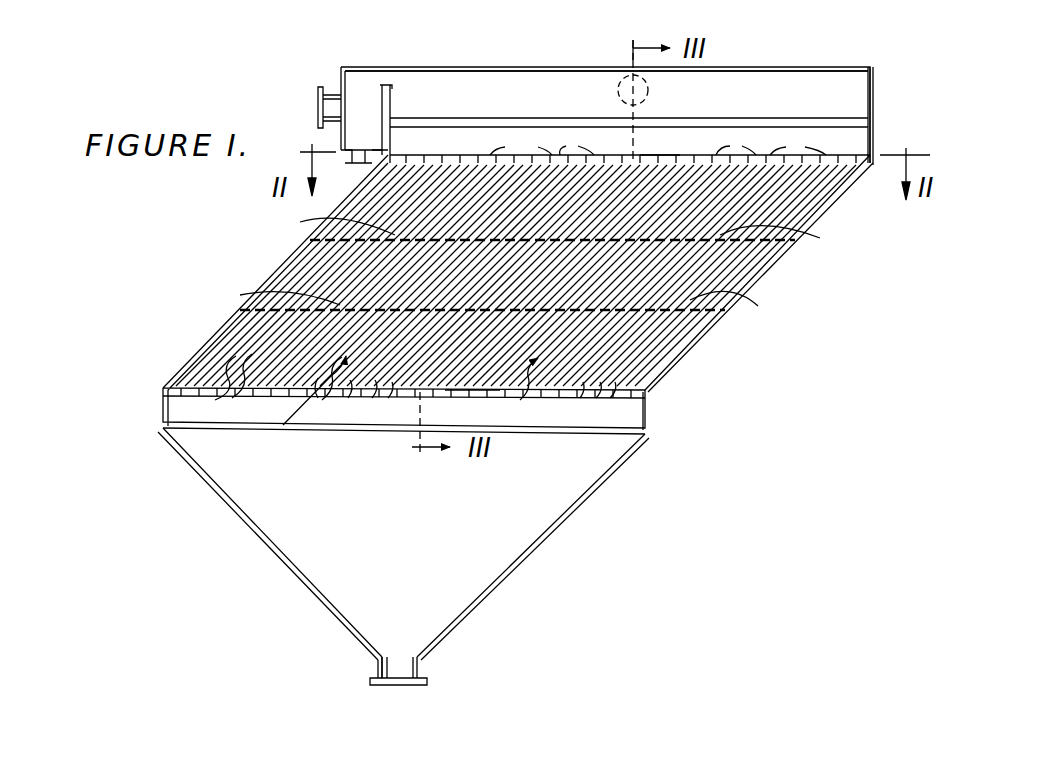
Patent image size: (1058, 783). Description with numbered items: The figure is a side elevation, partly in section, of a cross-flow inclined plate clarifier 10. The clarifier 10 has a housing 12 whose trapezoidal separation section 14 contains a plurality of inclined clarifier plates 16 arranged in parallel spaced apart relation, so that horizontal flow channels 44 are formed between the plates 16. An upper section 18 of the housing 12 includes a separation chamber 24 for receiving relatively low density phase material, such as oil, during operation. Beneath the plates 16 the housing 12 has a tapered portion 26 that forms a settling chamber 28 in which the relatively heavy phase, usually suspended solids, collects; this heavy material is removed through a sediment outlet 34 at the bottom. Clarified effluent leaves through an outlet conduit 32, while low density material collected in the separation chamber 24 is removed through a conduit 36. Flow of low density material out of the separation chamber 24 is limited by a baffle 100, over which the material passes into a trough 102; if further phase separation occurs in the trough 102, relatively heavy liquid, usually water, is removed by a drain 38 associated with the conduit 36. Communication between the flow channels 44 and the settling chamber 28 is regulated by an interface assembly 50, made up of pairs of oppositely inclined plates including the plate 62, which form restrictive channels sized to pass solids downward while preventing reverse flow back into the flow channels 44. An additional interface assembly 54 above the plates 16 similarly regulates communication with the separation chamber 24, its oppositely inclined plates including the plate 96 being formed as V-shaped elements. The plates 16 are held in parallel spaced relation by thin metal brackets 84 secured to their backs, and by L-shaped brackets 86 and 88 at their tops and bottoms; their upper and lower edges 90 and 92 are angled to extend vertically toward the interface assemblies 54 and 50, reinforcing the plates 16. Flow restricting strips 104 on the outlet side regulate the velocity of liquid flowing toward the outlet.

The cross-flow inclined plate clarifier 10 is at (896, 74).
The housing 12 is at (875, 100).
The trapezoidal separation section 14 is at (773, 297).
The inclined clarifier plates 16 is at (650, 343).
The upper section 18 is at (876, 119).
The separation chamber 24 is at (576, 104).
The tapered portion 26 is at (540, 548).
The settling chamber 28 is at (424, 557).
The outlet conduit 32 is at (649, 92).
The sediment outlet 34 is at (420, 672).
The low density outlet conduit 36 is at (330, 88).
The drain conduit 38 is at (350, 163).
The flow channels 44 is at (520, 404).
The interface assembly 50 is at (650, 408).
The additional interface assembly 54 is at (848, 151).
The inclined plate 62 is at (484, 414).
The brackets 84 is at (527, 266).
The L-shaped brackets 86 is at (658, 139).
The L-shaped brackets 88 is at (333, 397).
The upper edges 90 is at (655, 139).
The lower edges 92 is at (488, 398).
The inclined interface plate 96 is at (674, 149).
The baffle 100 is at (391, 92).
The trough 102 is at (372, 124).
The flow restricting strips 104 is at (790, 192).